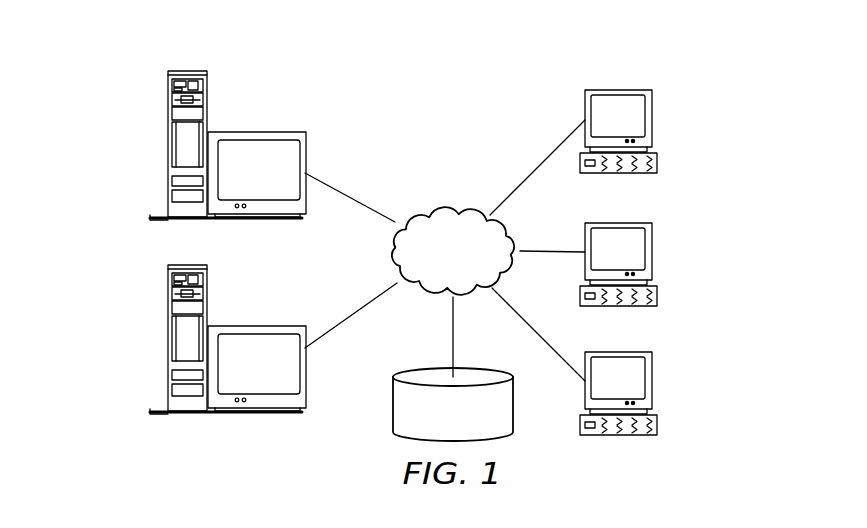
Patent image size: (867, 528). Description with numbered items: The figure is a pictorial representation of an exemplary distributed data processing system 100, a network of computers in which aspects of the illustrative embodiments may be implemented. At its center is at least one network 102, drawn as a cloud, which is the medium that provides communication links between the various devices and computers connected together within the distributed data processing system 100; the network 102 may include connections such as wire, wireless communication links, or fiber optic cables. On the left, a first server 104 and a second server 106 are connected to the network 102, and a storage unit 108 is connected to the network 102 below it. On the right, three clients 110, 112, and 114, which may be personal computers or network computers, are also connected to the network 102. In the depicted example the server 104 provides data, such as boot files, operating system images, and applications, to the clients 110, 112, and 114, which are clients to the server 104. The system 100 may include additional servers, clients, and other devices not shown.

The distributed data processing system 100 is at (497, 110).
The network 102 is at (428, 206).
The server 104 is at (168, 146).
The server 106 is at (168, 340).
The storage unit 108 is at (393, 417).
The client 110 is at (652, 117).
The client 112 is at (652, 250).
The client 114 is at (652, 382).